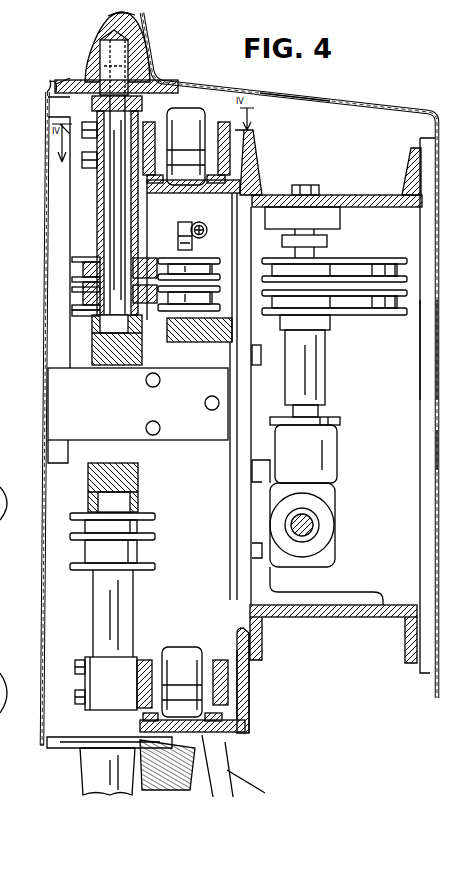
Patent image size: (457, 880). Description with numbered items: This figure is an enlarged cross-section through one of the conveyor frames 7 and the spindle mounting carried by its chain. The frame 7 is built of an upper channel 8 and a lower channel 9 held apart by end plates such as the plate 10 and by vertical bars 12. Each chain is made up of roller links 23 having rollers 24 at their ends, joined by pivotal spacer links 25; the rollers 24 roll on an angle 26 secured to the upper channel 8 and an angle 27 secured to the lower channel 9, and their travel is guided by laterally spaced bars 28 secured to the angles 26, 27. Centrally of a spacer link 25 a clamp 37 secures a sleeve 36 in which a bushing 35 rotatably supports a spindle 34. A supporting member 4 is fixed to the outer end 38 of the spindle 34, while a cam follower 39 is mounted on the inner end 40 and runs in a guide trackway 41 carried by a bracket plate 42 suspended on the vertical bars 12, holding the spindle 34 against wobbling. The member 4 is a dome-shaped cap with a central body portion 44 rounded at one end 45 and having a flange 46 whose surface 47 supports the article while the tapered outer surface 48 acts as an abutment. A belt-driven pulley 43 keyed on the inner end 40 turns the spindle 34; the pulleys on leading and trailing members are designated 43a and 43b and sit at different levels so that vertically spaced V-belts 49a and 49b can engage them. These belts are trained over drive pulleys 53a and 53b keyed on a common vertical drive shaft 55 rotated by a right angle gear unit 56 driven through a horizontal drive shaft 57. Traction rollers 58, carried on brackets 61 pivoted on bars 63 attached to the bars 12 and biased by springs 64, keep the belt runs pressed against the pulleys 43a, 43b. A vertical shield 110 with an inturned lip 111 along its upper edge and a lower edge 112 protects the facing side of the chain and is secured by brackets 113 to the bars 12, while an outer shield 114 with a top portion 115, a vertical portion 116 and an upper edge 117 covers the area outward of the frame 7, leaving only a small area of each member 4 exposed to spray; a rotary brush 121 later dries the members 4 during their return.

The supporting member 4 is at (135, 16).
The frame 7 is at (398, 568).
The upper channel 8 is at (362, 195).
The lower channel 9 is at (352, 617).
The end plate 10 is at (419, 374).
The vertical bar 12 is at (236, 538).
The roller link 23 is at (250, 686).
The roller 24 is at (190, 116).
The spacer link 25 is at (144, 660).
The angle 26 is at (170, 193).
The angle 27 is at (250, 710).
The guide bar 28 is at (220, 193).
The spindle 34 is at (112, 212).
The bushing 35 is at (92, 108).
The sleeve 36 is at (97, 203).
The clamp 37 is at (98, 168).
The spindle outer end 38 is at (126, 48).
The cam follower 39 is at (98, 323).
The spindle inner end 40 is at (82, 292).
The guide trackway 41 is at (112, 352).
The bracket plate 42 is at (214, 485).
The pulley 43 is at (142, 554).
The spindle drive pulley 43a is at (72, 308).
The spindle drive pulley 43b is at (72, 258).
The central body portion 44 is at (92, 38).
The rounded end 45 is at (118, 12).
The flange 46 is at (52, 93).
The supporting surface 47 is at (64, 80).
The outer surface 48 is at (100, 60).
The V-belt 49a is at (156, 303).
The V-belt 49b is at (153, 258).
The drive pulley 53a is at (372, 315).
The drive pulley 53b is at (372, 258).
The vertical drive shaft 55 is at (318, 409).
The right angle gear unit 56 is at (332, 502).
The horizontal drive shaft 57 is at (313, 528).
The traction roller 58 is at (212, 296).
The bracket 61 is at (200, 218).
The bar 63 is at (208, 330).
The spring 64 is at (200, 238).
The vertical shield 110 is at (44, 372).
The inturned lip 111 is at (46, 81).
The lower edge 112 is at (40, 745).
The bracket 113 is at (102, 428).
The shield 114 is at (410, 111).
The top portion 115 is at (314, 98).
The vertical portion 116 is at (435, 433).
The upper edge 117 is at (148, 20).
The rotary brush 121 is at (207, 766).